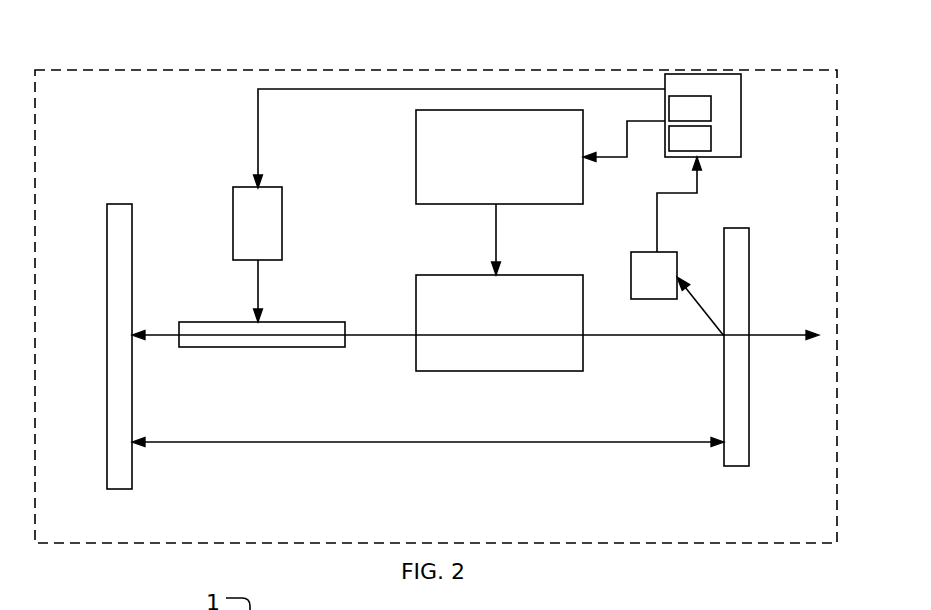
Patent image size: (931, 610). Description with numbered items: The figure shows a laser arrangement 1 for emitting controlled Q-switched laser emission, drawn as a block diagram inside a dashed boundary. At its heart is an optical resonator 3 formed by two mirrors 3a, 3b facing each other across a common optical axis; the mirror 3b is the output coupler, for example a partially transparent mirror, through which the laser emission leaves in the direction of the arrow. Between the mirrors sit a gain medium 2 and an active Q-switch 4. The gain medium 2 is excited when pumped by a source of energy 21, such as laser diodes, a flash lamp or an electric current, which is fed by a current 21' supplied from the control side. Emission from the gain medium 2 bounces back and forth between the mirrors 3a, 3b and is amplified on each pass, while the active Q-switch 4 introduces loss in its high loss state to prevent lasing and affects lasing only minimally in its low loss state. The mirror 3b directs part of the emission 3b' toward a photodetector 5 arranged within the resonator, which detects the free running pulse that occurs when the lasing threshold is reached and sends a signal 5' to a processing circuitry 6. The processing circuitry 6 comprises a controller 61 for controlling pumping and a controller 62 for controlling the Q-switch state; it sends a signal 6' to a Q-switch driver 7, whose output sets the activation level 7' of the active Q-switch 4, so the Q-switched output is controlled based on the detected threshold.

The laser arrangement 1 is at (250, 54).
The gain medium 2 is at (262, 360).
The optical resonator 3 is at (428, 454).
The mirror 3a is at (120, 192).
The mirror 3b is at (765, 323).
The emission 3b' is at (701, 305).
The active Q-switch 4 is at (499, 323).
The photodetector 5 is at (654, 275).
The signal 5' is at (679, 204).
The processing circuitry 6 is at (703, 115).
The signal 6' is at (624, 135).
The Q-switch driver 7 is at (499, 157).
The activation level 7' is at (506, 239).
The source of energy 21 is at (257, 223).
The current 21' is at (460, 138).
The controller 61 is at (690, 109).
The controller 62 is at (690, 139).